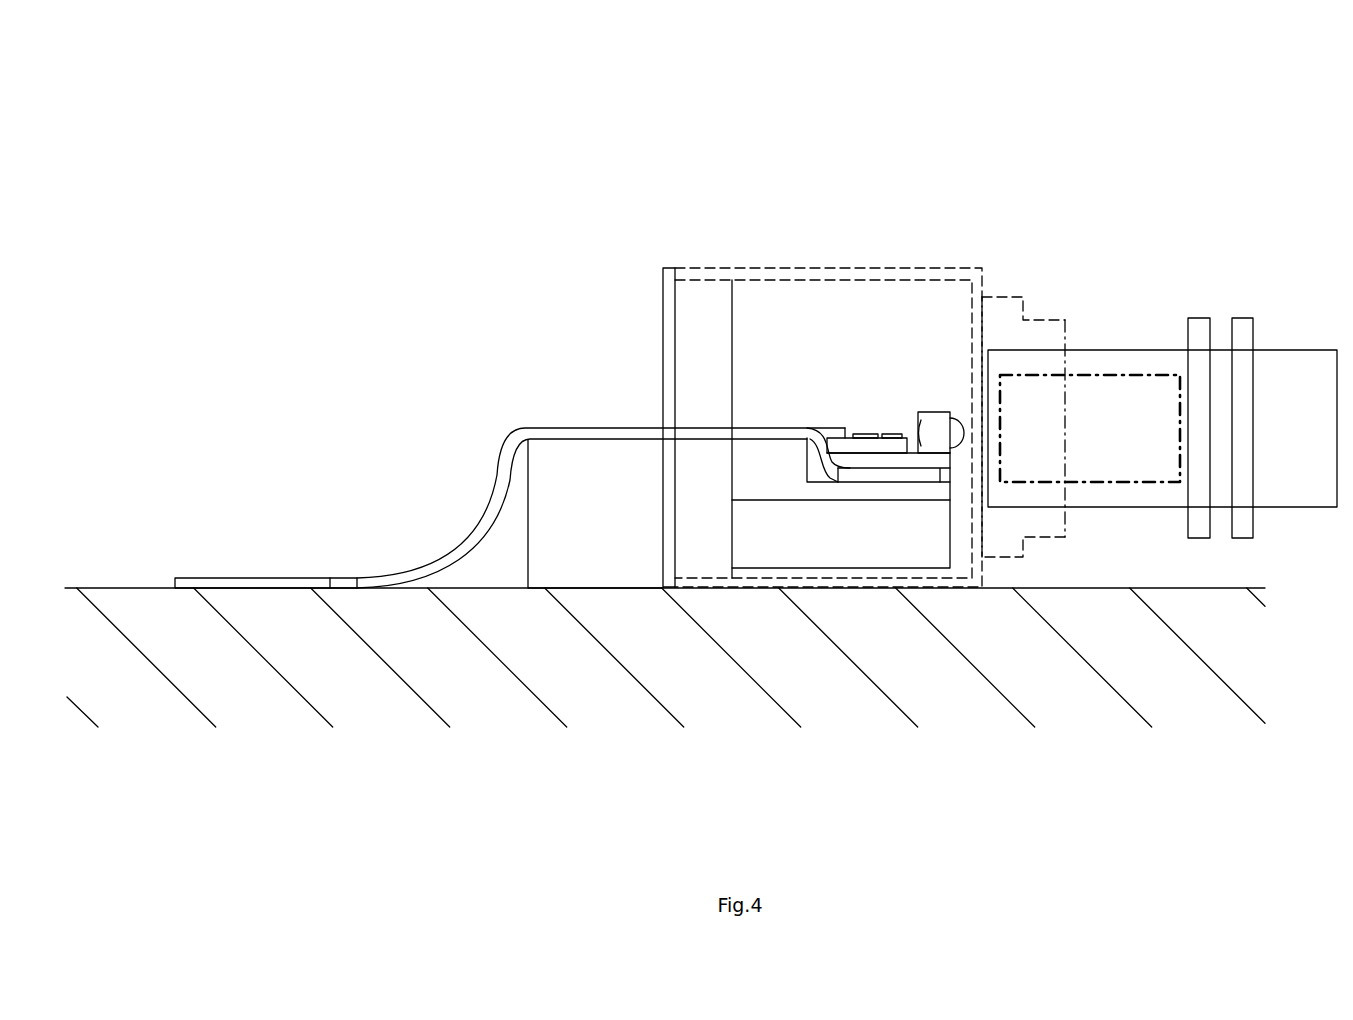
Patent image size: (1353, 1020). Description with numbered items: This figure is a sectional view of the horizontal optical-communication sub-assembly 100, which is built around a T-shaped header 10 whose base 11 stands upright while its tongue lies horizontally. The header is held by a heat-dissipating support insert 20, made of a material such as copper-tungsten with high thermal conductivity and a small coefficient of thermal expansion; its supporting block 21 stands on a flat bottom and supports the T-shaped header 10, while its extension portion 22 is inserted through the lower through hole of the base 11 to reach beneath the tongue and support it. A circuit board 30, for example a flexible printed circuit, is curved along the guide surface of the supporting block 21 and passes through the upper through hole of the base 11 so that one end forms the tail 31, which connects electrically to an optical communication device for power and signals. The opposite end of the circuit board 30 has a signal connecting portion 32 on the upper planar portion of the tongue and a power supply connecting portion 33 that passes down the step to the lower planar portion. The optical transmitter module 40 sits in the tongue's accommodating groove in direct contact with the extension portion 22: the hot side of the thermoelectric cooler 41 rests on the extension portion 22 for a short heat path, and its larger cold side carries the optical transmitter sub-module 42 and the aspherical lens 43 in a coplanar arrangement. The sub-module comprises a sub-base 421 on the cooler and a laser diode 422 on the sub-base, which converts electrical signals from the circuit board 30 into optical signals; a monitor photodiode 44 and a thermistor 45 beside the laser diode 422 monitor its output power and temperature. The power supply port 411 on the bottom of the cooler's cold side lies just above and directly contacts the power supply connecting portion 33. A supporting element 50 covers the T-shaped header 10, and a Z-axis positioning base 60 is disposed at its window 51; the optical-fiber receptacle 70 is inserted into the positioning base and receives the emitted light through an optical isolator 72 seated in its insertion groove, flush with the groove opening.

The horizontal optical-communication sub-assembly 100 is at (1277, 67).
The T-shaped header 10 is at (703, 413).
The base 11 is at (683, 303).
The heat-dissipating support insert 20 is at (669, 487).
The supporting block 21 is at (593, 458).
The extension portion 22 is at (762, 533).
The circuit board 30 is at (483, 466).
The tail 31 is at (322, 584).
The signal connecting portion 32 is at (848, 476).
The power supply connecting portion 33 is at (745, 435).
The optical transmitter module 40 is at (825, 431).
The thermoelectric cooler 41 is at (908, 482).
The power supply port 411 is at (858, 468).
The optical transmitter sub-module 42 is at (951, 263).
The sub-base 421 is at (878, 434).
The laser diode 422 is at (889, 434).
The aspherical lens 43 is at (930, 432).
The monitor photodiode 44 is at (833, 470).
The thermistor 45 is at (848, 424).
The supporting element 50 is at (851, 258).
The window 51 is at (978, 348).
The Z-axis positioning base 60 is at (1049, 306).
The optical-fiber receptacle 70 is at (1162, 376).
The optical isolator 72 is at (1112, 402).